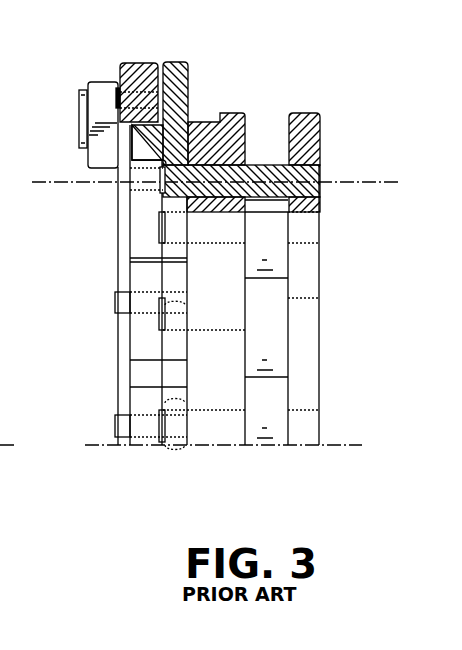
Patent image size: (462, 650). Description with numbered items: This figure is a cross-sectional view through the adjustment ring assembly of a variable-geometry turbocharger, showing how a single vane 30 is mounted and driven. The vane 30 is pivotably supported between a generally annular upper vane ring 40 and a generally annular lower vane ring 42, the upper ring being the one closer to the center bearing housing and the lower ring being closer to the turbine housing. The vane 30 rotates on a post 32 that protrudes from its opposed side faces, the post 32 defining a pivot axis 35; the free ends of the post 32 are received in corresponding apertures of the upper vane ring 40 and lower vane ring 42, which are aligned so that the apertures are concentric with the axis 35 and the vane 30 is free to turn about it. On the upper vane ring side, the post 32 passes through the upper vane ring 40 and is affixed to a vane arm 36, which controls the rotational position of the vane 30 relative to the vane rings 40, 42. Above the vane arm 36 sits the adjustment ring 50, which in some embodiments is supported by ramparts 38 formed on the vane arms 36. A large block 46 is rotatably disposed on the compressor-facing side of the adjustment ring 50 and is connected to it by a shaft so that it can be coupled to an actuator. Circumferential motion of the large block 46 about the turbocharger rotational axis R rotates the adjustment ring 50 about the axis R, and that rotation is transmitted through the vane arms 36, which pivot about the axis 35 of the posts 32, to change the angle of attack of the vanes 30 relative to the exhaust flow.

The vane 30 is at (270, 233).
The post 32 is at (268, 175).
The pivot axis 35 is at (345, 178).
The vane arm 36 is at (170, 62).
The rampart 38 is at (137, 145).
The upper vane ring 40 is at (200, 128).
The lower vane ring 42 is at (300, 120).
The large block 46 is at (103, 88).
The adjustment ring 50 is at (150, 62).
The rotational axis R is at (328, 445).